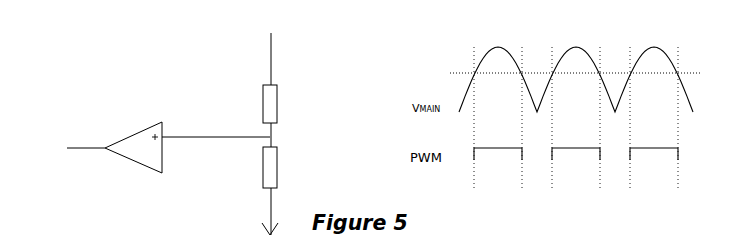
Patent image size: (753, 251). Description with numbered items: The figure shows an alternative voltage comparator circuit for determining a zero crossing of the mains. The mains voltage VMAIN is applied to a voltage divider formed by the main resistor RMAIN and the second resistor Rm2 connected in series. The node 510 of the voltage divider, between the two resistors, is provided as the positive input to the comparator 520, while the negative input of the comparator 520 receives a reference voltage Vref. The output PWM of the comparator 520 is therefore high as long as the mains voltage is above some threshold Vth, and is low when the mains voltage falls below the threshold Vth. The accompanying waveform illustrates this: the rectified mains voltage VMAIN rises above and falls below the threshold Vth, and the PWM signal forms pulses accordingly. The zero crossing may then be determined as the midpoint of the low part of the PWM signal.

The node 510 is at (244, 128).
The comparator 520 is at (115, 175).
The resistor Rmain RMAIN is at (294, 116).
The resistor Rm2 is at (268, 134).
The reference voltage Vref is at (216, 151).
The mains voltage VMAIN is at (271, 53).
The comparator output PWM is at (69, 143).
The threshold Vth is at (588, 69).